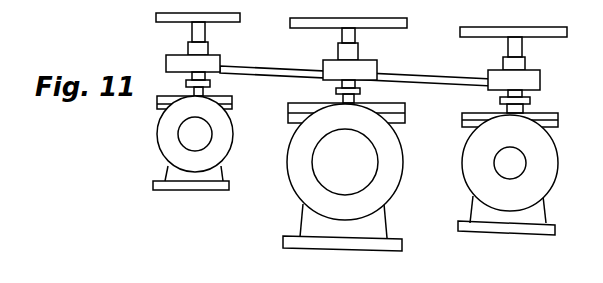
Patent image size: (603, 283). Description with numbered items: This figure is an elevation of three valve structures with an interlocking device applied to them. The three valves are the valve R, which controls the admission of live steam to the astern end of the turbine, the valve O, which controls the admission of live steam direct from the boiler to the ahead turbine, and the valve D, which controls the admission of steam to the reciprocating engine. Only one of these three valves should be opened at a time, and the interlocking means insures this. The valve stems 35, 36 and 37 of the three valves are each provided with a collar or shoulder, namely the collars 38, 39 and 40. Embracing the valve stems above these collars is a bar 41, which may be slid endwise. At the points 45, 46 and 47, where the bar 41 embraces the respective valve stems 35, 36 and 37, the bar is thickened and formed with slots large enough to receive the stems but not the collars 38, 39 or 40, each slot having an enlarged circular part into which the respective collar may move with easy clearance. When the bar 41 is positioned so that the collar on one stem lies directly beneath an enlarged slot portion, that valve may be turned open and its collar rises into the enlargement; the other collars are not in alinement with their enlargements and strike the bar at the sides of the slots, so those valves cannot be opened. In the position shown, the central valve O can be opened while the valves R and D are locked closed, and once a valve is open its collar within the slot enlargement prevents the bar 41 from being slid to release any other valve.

The valve stem 35 is at (203, 36).
The valve stem 36 is at (358, 41).
The valve stem 37 is at (523, 50).
The collar 38 is at (212, 83).
The collar 39 is at (361, 89).
The collar 40 is at (531, 98).
The interlocking bar 41 is at (422, 77).
The thickened point of bar 45 is at (168, 61).
The thickened point of bar 46 is at (323, 66).
The thickened point of bar 47 is at (490, 74).
The valve R is at (185, 143).
The valve O is at (351, 177).
The valve D is at (519, 174).